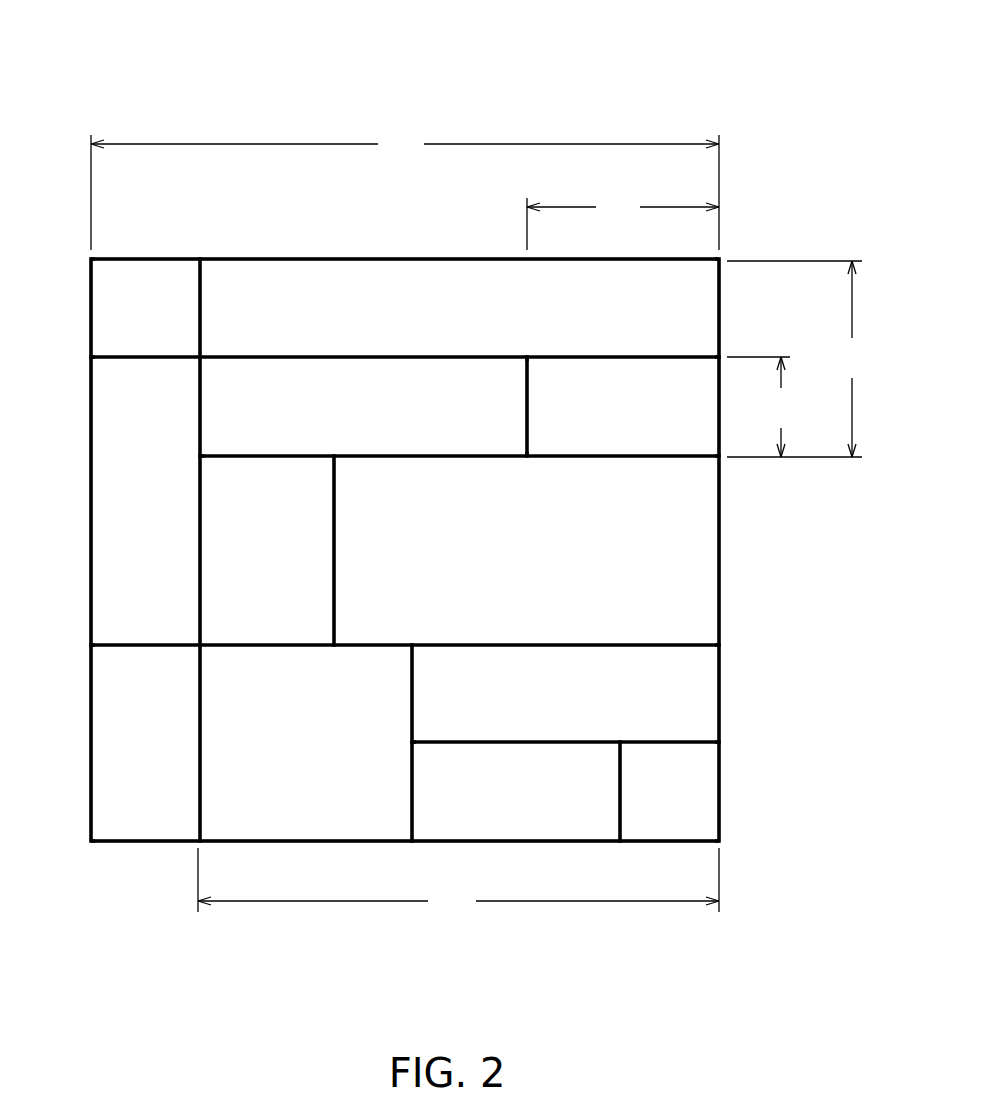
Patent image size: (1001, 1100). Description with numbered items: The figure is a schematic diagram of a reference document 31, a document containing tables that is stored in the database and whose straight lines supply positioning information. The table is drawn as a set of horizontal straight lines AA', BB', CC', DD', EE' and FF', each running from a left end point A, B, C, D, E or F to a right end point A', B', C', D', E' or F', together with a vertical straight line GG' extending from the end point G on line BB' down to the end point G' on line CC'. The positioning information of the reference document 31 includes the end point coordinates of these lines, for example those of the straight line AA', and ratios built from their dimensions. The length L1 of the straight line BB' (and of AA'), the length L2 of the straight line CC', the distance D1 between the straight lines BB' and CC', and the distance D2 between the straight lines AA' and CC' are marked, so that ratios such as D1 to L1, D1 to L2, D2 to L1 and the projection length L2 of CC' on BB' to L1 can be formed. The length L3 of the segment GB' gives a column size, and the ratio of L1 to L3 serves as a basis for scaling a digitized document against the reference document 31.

The reference document 31 is at (48, 41).
The length of the straight line BB' L1 is at (405, 189).
The length of the straight line CC' L2 is at (458, 884).
The length of the straight line GB' L3 is at (623, 220).
The distance between the straight line BB' and the straight line CC' D1 is at (765, 407).
The distance between the straight line AA' and the straight line CC' D2 is at (801, 359).
The end point of the straight line AA' A is at (77, 261).
The end point of the straight line BB' B is at (77, 359).
The end point of the straight line CC' C is at (186, 458).
The end point of the straight line DD' D is at (76, 647).
The end point of the straight line EE' E is at (397, 745).
The end point of the straight line FF' F is at (76, 843).
The end point of the straight line GG' G is at (524, 341).
The end point of the straight line AA' A' is at (735, 240).
The end point of the straight line BB' B' is at (735, 339).
The end point of the straight line CC' C' is at (735, 475).
The end point of the straight line DD' D' is at (736, 647).
The end point of the straight line EE' E' is at (734, 745).
The end point of the straight line FF' F' is at (733, 843).
The end point of the straight line GG' G' is at (528, 473).